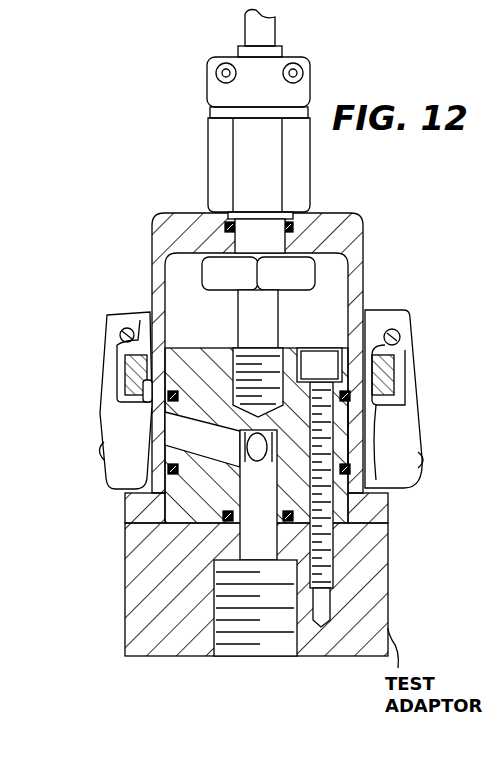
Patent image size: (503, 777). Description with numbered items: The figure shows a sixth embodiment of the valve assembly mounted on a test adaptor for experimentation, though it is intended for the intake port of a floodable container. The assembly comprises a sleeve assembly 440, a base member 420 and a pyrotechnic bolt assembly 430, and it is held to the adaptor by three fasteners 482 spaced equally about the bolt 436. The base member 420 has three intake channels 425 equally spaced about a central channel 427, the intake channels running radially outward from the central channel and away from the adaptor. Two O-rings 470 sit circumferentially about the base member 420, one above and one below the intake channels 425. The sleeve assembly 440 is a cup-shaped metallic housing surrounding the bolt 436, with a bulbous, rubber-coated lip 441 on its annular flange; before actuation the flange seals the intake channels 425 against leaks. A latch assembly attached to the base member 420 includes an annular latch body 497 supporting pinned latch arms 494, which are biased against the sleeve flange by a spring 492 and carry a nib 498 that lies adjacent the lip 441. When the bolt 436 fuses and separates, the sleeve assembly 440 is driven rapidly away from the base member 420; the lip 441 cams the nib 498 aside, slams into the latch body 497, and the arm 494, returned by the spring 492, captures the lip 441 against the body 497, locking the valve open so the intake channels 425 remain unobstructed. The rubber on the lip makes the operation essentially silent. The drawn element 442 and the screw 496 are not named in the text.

The base member 420 is at (190, 372).
The intake channels 425 is at (183, 425).
The central channel 427 is at (275, 503).
The pyrotechnic bolt assembly 430 is at (196, 79).
The bolt 436 is at (249, 314).
The sleeve assembly 440 is at (372, 251).
The lip 441 is at (145, 497).
The inner wall 442 is at (355, 478).
The O-rings 470 is at (340, 445).
The fasteners 482 is at (325, 372).
The spring 492 is at (425, 458).
The latch arms 494 is at (405, 425).
The latch screw 496 is at (400, 336).
The latch body 497 is at (385, 385).
The nib 498 is at (148, 465).